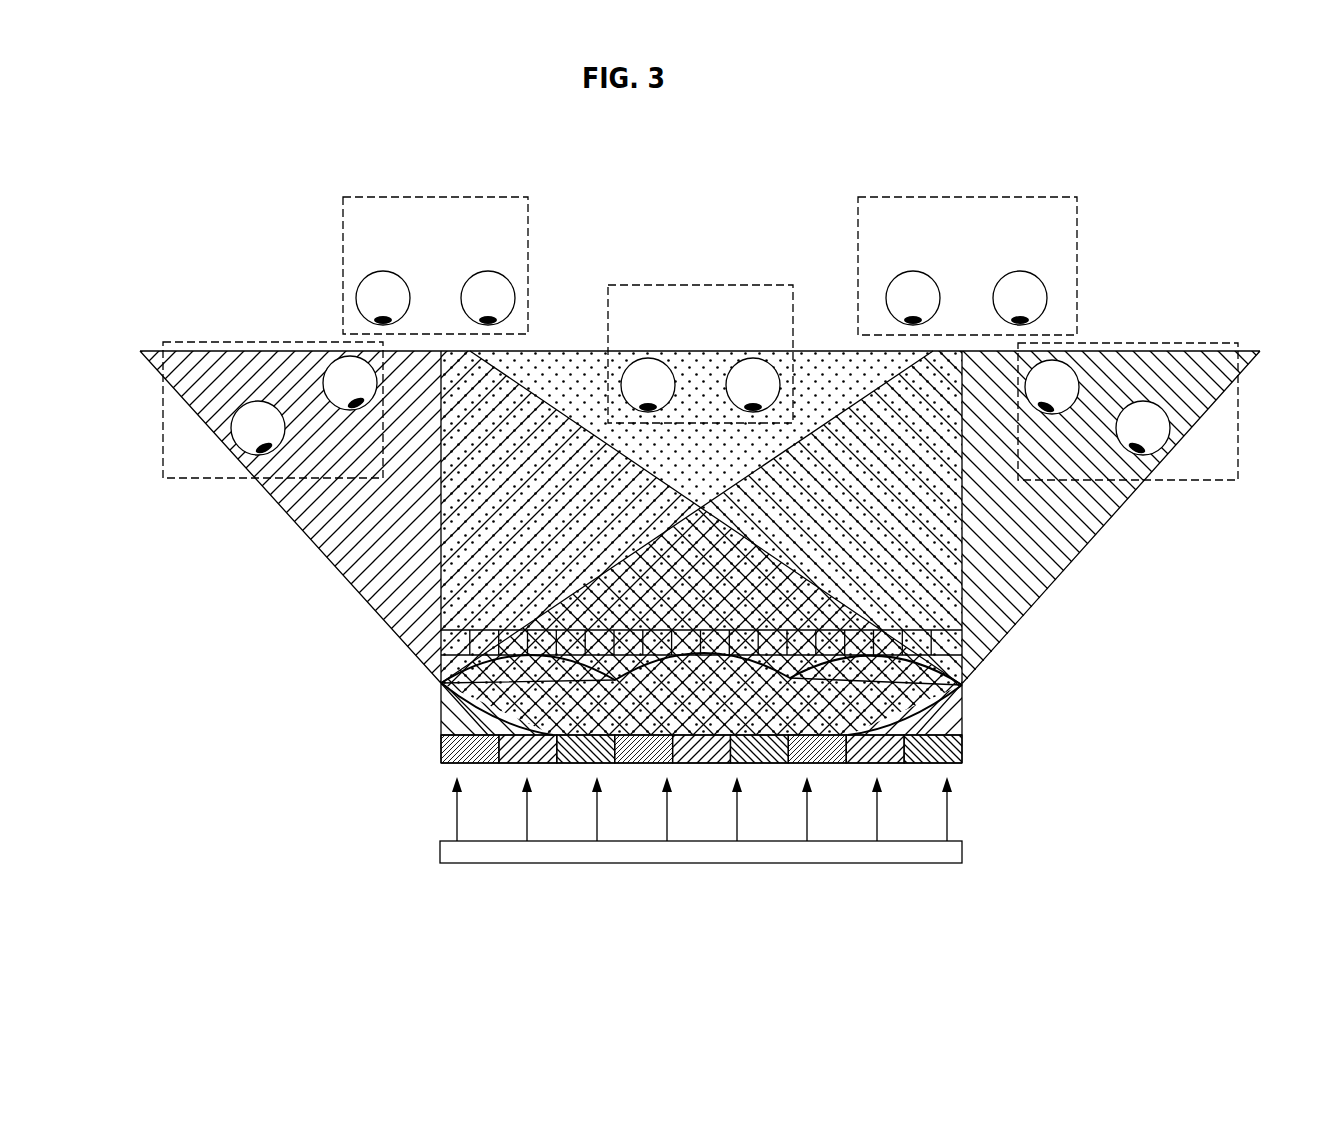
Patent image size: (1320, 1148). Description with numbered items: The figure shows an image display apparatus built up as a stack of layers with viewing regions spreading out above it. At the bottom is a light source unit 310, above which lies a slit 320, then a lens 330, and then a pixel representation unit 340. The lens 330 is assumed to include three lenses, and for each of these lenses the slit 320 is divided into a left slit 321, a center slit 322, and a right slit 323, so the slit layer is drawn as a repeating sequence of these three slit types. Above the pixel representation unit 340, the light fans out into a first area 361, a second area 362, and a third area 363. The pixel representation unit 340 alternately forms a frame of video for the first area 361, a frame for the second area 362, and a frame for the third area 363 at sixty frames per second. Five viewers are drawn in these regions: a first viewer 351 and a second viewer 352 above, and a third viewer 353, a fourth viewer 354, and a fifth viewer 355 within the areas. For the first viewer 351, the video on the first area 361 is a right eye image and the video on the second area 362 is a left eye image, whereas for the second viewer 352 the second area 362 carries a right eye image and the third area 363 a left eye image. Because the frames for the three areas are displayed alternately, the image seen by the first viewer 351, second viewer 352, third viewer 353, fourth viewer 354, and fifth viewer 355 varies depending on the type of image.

The light source unit 310 is at (963, 850).
The slit 320 is at (963, 745).
The left slit 321 is at (825, 890).
The center slit 322 is at (888, 890).
The right slit 323 is at (952, 890).
The lens 330 is at (963, 705).
The pixel representation unit 340 is at (963, 646).
The first viewer 351 is at (343, 262).
The second viewer 352 is at (1077, 262).
The third viewer 353 is at (205, 480).
The fourth viewer 354 is at (700, 285).
The fifth viewer 355 is at (1196, 480).
The first area 361 is at (290, 517).
The second area 362 is at (701, 429).
The third area 363 is at (1111, 518).